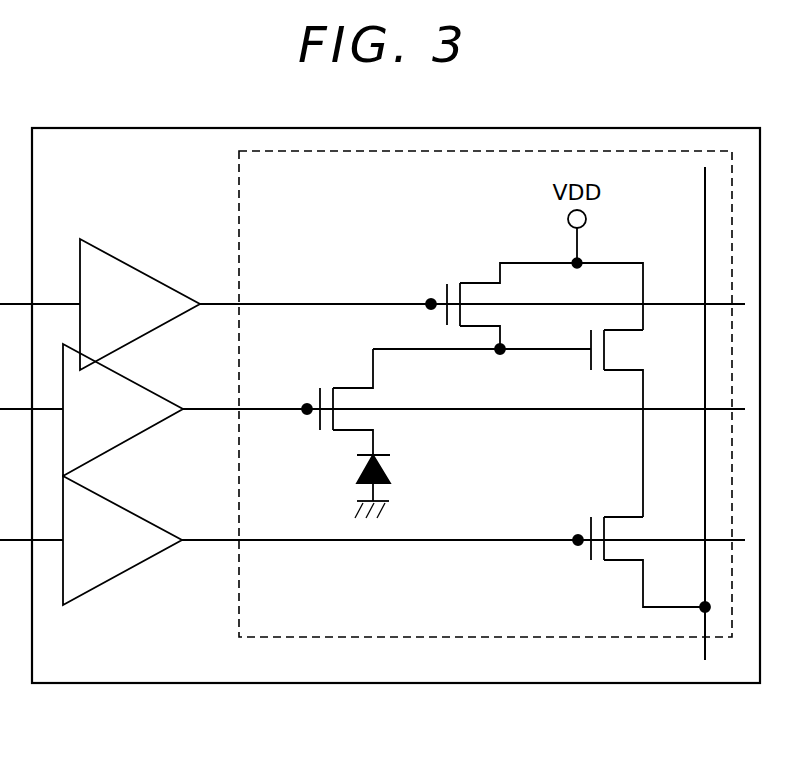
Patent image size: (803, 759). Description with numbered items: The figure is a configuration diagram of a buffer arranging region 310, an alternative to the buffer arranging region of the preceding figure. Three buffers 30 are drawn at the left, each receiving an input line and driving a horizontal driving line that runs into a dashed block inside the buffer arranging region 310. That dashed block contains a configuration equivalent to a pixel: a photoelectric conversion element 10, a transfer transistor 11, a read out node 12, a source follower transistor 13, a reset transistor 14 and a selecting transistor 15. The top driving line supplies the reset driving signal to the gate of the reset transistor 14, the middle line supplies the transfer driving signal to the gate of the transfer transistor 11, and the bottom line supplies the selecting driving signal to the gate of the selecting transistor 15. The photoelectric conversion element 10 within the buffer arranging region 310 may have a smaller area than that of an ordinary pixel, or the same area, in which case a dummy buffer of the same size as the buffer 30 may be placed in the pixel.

The buffer arranging region 310 is at (411, 738).
The buffer 30 is at (140, 268).
The reset transistor 14 is at (452, 282).
The transfer transistor 11 is at (327, 388).
The read out node 12 is at (420, 350).
The source follower transistor 13 is at (598, 372).
The photoelectric conversion element 10 is at (358, 468).
The selecting transistor 15 is at (600, 562).